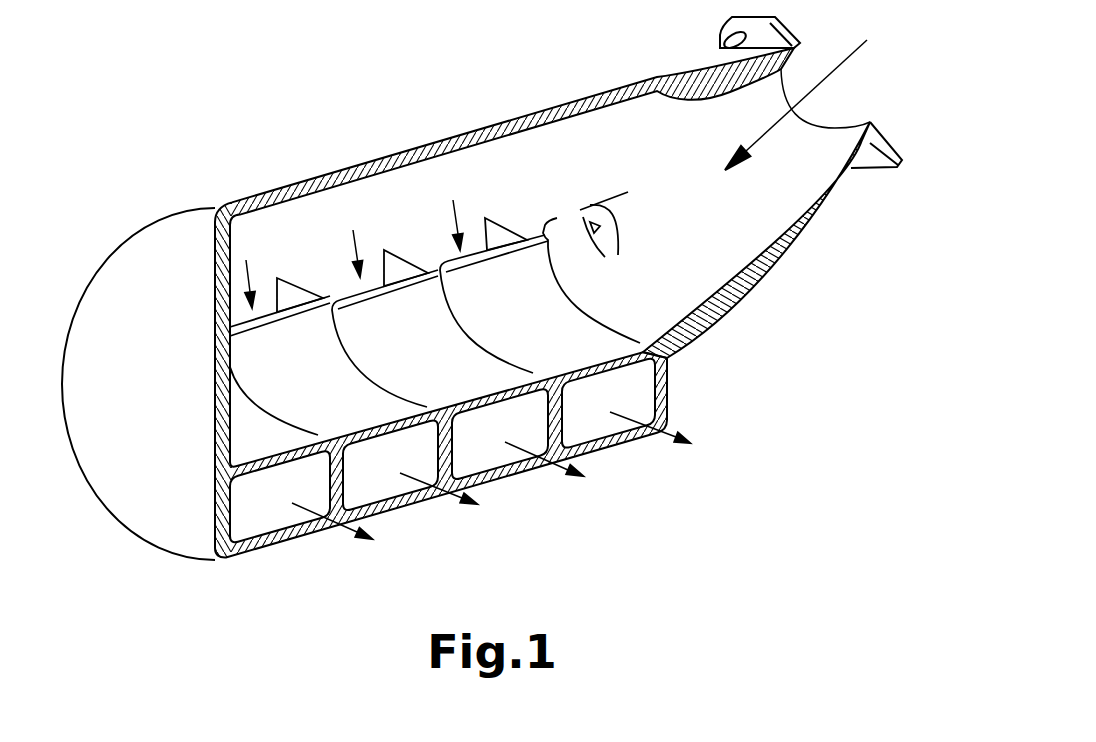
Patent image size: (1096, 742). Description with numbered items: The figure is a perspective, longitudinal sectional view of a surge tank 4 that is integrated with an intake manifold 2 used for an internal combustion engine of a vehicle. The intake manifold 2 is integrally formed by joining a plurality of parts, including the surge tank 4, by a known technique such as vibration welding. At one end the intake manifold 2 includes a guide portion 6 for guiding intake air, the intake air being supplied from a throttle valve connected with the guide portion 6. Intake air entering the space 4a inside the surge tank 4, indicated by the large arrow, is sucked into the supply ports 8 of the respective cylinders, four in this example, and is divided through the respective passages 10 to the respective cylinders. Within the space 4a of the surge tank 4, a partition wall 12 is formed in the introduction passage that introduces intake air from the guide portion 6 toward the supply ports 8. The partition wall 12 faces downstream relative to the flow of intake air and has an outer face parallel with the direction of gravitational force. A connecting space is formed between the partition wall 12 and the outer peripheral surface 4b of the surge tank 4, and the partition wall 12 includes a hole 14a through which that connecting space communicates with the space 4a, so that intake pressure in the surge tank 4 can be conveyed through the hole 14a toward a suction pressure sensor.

The intake manifold 2 is at (330, 110).
The surge tank 4 is at (130, 238).
The space 4a is at (482, 170).
The outer peripheral surface 4b is at (599, 95).
The guide portion 6 is at (837, 142).
The supply ports 8 is at (325, 272).
The passages 10 is at (282, 520).
The partition wall 12 is at (592, 203).
The hole 14a is at (582, 213).